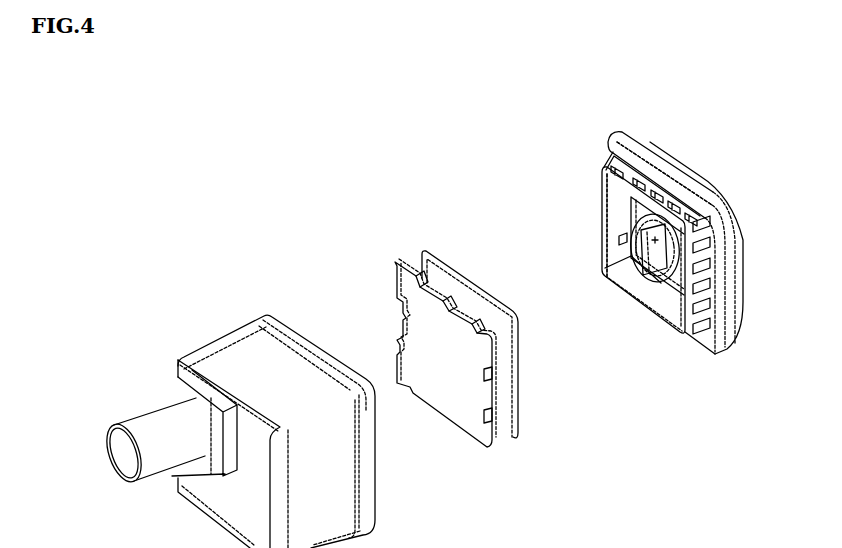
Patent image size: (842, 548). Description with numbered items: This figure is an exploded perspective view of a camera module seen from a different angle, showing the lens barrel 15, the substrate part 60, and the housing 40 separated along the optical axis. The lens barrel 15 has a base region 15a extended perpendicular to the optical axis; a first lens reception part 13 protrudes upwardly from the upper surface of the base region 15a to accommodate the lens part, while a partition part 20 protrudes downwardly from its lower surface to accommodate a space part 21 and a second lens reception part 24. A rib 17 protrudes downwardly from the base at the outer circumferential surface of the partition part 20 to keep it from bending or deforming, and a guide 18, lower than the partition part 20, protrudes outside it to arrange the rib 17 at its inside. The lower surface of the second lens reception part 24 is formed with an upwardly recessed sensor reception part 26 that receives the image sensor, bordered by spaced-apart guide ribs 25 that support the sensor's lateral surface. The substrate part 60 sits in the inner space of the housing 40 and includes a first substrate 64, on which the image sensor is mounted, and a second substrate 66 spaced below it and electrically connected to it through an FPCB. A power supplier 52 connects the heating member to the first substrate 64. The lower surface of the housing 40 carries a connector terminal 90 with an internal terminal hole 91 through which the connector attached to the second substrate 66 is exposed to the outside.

The first lens reception part 13 is at (693, 168).
The lens barrel 15 is at (620, 131).
The base region 15a is at (648, 142).
The rib 17 is at (610, 165).
The guide 18 is at (608, 147).
The partition part 20 is at (600, 193).
The space part 21 is at (621, 206).
The second lens reception part 24 is at (651, 277).
The guide rib 25 is at (663, 235).
The sensor reception part 26 is at (630, 258).
The power supplier 52 is at (618, 238).
The housing 40 is at (238, 345).
The connector terminal 90 is at (143, 418).
The terminal hole 91 is at (123, 450).
The substrate part 60 is at (485, 384).
The first substrate 64 is at (518, 424).
The second substrate 66 is at (458, 382).